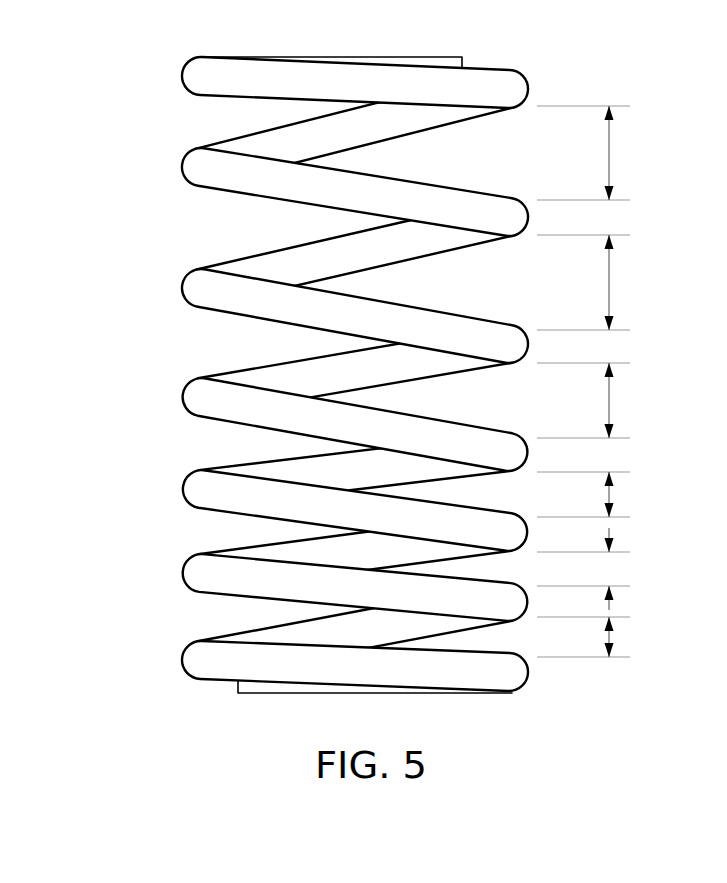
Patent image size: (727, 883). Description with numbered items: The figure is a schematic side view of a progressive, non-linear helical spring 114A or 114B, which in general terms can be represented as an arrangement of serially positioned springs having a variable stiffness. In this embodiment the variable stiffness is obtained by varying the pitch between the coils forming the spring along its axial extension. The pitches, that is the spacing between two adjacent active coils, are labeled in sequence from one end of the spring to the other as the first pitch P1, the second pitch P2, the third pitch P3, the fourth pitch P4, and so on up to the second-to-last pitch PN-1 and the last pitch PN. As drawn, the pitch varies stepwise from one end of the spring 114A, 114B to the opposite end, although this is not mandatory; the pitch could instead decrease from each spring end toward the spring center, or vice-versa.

The helical spring 114A is at (126, 109).
The helical spring 114B is at (275, 352).
The pitch P1 is at (593, 153).
The pitch P2 is at (593, 282).
The pitch P3 is at (593, 400).
The pitch P4 is at (593, 494).
The pitch PN-1 is at (610, 569).
The pitch PN is at (597, 637).